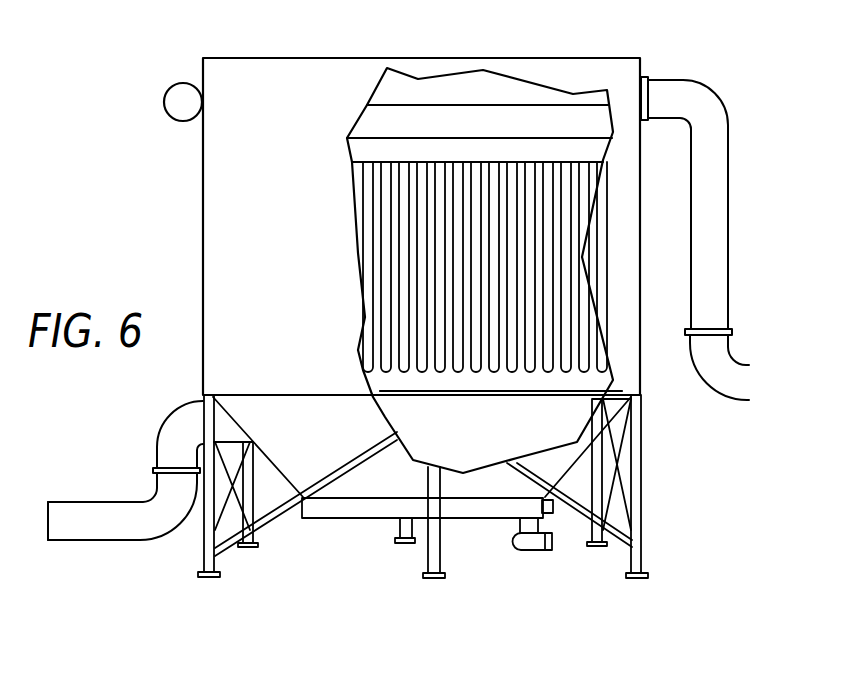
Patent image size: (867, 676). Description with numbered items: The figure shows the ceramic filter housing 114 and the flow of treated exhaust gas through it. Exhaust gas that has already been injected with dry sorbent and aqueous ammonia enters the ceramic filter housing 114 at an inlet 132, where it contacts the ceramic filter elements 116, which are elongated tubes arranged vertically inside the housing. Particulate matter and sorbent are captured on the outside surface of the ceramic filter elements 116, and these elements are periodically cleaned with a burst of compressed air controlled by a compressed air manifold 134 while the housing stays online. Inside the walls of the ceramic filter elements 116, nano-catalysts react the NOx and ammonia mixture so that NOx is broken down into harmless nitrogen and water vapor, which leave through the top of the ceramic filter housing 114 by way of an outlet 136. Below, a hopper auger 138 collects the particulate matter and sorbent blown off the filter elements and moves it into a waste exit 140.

The ceramic filter housing 114 is at (562, 58).
The ceramic filter elements 116 is at (525, 232).
The inlet 132 is at (76, 523).
The compressed air manifold 134 is at (163, 103).
The outlet 136 is at (717, 382).
The hopper auger 138 is at (335, 525).
The waste exit 140 is at (562, 515).